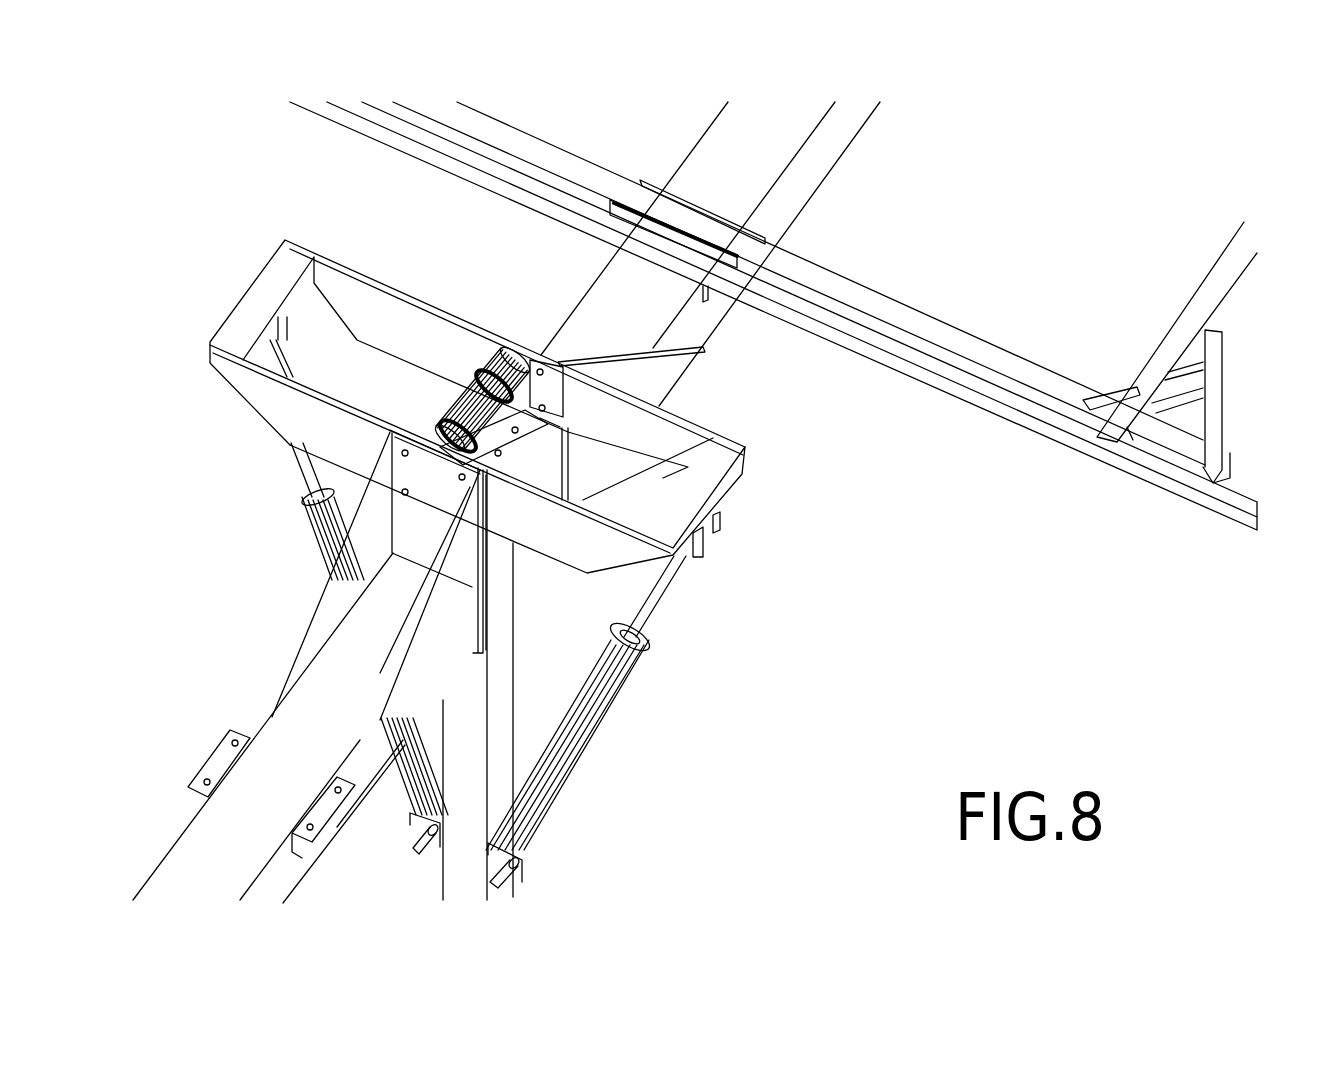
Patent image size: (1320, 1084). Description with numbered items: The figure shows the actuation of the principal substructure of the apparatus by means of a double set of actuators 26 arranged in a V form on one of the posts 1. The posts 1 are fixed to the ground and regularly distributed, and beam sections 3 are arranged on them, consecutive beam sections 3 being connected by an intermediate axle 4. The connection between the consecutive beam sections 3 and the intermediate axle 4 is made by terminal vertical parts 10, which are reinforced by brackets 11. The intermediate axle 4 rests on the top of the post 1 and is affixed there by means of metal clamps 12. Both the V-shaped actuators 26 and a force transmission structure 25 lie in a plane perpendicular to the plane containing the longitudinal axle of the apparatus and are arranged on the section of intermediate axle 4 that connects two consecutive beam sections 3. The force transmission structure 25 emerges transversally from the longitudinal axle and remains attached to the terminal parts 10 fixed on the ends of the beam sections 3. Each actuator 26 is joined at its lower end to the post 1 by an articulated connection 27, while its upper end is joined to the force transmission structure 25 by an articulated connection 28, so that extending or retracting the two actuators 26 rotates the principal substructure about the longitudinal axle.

The post 1 is at (453, 877).
The beam section 3 is at (707, 327).
The intermediate axle 4 is at (463, 393).
The terminal vertical part 10 is at (410, 517).
The bracket 11 is at (320, 613).
The metal clamp 12 is at (500, 375).
The force transmission structure 25 is at (775, 468).
The actuator 26 is at (560, 783).
The articulated connection 27 is at (485, 873).
The articulated connection 28 is at (710, 537).